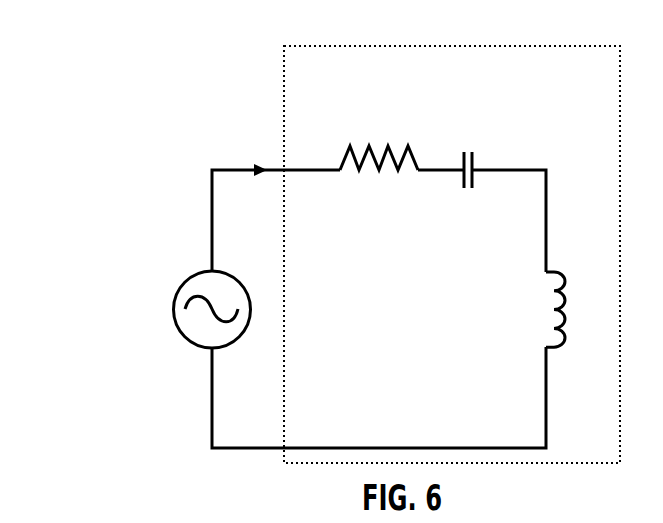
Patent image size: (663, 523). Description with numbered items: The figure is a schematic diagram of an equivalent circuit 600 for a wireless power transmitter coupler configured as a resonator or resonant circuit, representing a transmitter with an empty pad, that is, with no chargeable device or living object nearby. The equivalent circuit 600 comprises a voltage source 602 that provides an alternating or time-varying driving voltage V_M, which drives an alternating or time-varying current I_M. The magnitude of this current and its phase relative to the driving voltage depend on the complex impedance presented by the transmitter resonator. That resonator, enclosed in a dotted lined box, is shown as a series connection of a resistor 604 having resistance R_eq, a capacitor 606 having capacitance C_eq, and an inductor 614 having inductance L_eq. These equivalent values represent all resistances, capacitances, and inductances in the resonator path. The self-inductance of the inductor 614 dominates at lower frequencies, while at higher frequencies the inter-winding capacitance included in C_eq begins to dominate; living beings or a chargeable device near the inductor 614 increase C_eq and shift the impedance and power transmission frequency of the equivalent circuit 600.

The equivalent circuit 600 is at (178, 60).
The voltage source 602 is at (187, 278).
The resistor 604 is at (398, 171).
The capacitor 606 is at (470, 188).
The inductor 614 is at (553, 277).